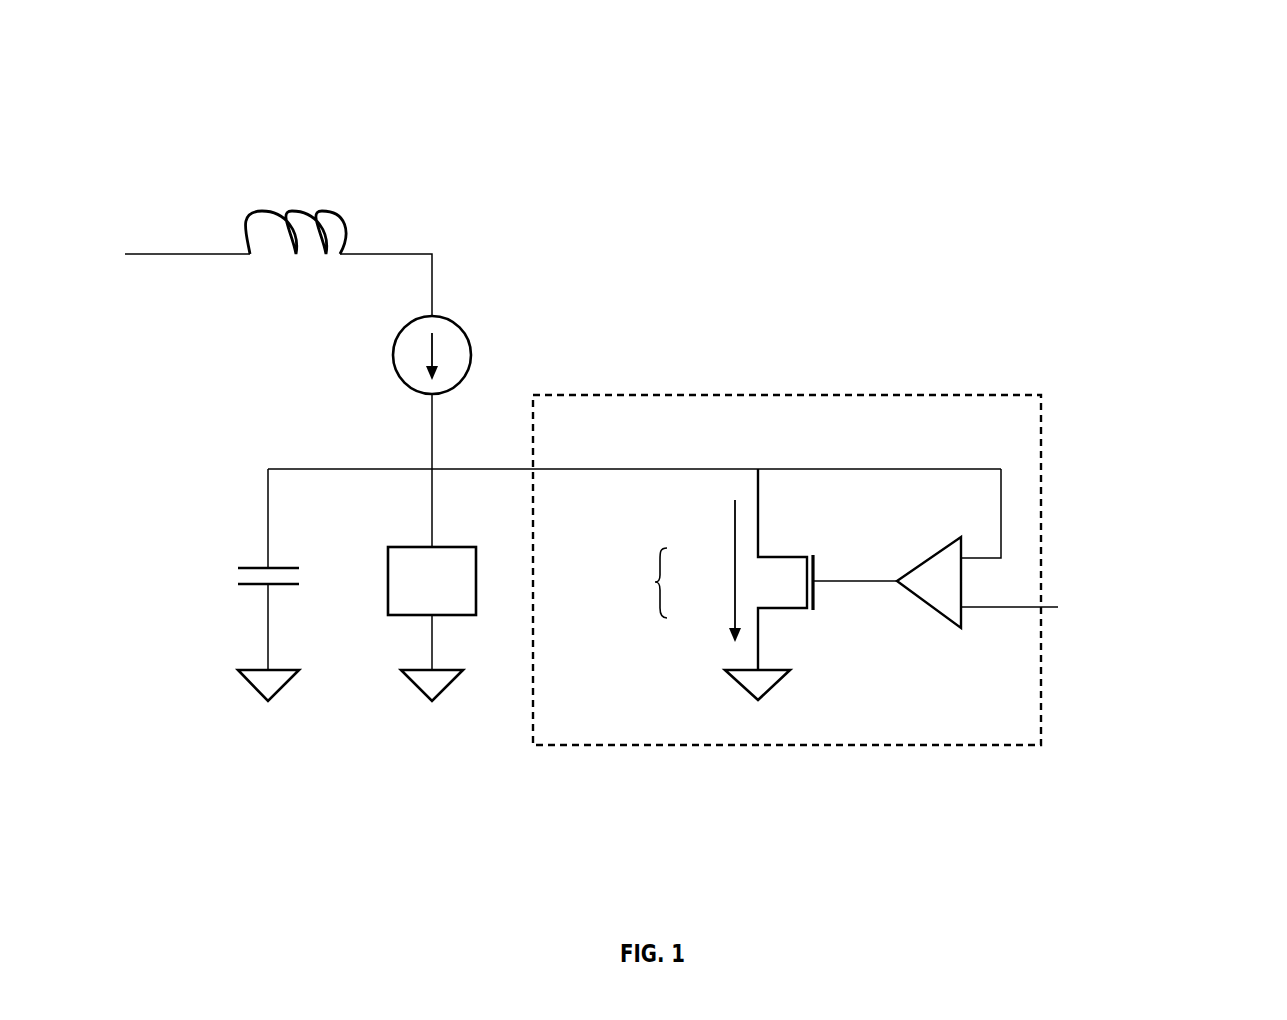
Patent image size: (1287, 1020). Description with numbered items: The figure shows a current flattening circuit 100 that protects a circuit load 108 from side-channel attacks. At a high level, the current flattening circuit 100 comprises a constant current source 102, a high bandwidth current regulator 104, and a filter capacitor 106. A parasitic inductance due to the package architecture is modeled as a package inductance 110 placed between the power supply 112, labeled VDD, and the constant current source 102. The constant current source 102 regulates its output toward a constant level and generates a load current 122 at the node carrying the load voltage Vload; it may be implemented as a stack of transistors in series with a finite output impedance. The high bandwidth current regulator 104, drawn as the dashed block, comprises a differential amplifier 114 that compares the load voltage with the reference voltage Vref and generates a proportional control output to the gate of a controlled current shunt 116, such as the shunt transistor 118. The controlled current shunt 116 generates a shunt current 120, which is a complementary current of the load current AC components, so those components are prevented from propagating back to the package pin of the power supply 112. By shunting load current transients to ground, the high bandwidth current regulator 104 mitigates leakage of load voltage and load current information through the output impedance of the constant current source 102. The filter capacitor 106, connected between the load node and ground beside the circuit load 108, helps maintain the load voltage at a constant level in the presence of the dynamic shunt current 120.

The current flattening circuit 100 is at (1168, 108).
The constant current source 102 is at (468, 347).
The high bandwidth current regulator 104 is at (963, 395).
The filter capacitor 106 is at (245, 563).
The circuit load 108 is at (387, 618).
The package inductance 110 is at (342, 223).
The power supply 112 is at (110, 237).
The differential amplifier 114 is at (912, 570).
The controlled current shunt 116 is at (655, 572).
The shunt transistor 118 is at (798, 612).
The shunt current 120 is at (733, 592).
The load current 122 is at (432, 410).